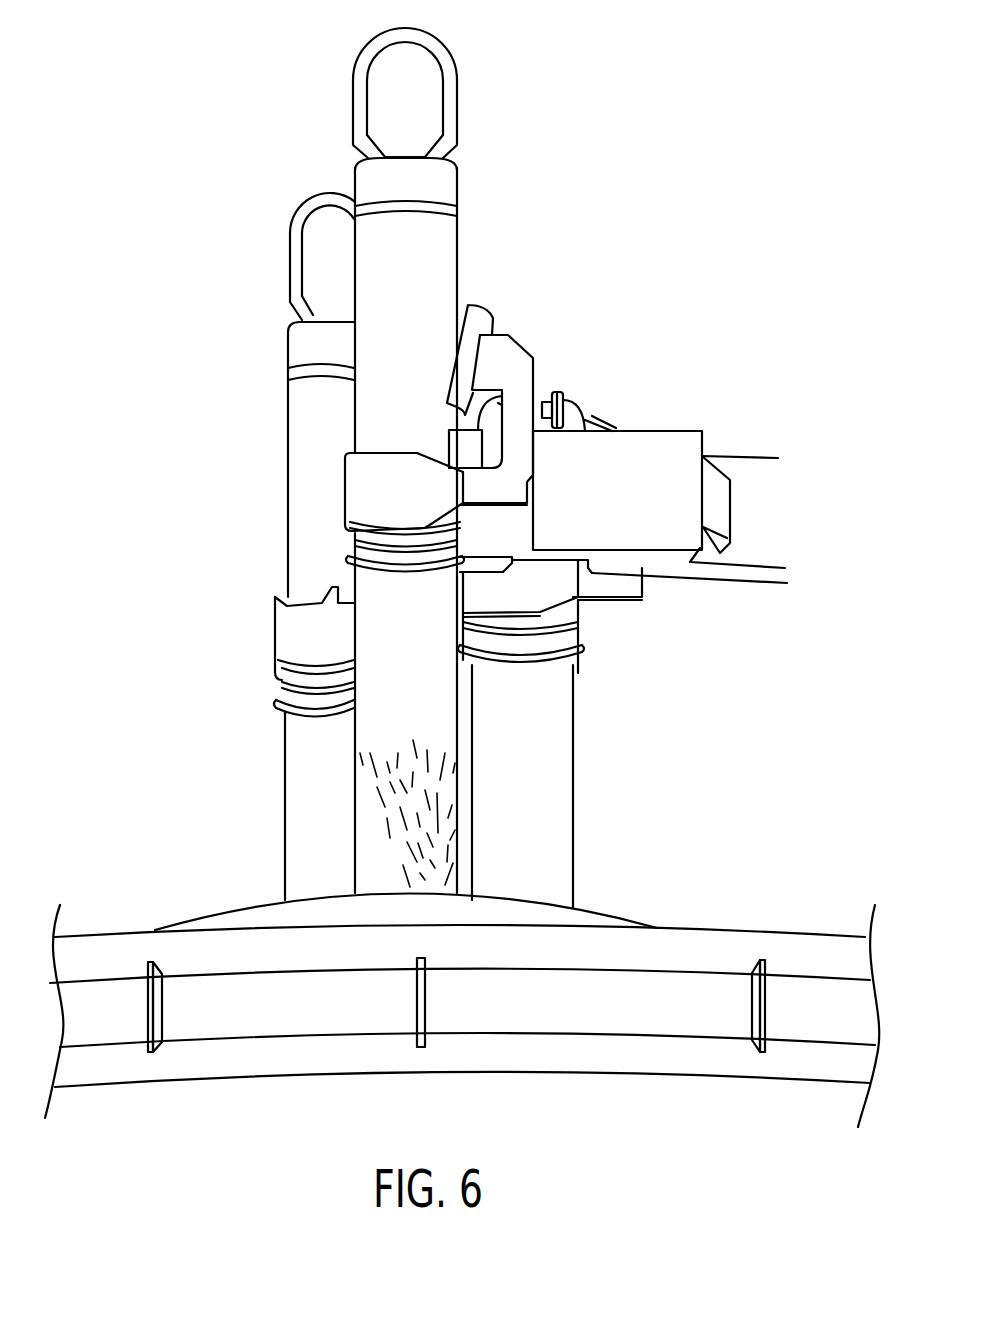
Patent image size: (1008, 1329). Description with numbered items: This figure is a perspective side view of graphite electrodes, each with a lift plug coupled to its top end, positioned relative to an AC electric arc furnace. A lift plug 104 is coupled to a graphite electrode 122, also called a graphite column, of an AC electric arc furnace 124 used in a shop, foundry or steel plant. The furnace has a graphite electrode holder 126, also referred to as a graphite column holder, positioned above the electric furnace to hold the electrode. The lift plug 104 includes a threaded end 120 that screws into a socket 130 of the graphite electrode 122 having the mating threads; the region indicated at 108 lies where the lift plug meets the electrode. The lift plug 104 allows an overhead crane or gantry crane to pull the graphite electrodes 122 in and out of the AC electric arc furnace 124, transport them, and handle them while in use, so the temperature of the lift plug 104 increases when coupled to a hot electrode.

The lift plug 104 is at (461, 44).
The cap of hydraulic cylinder 108 is at (336, 143).
The threaded end 120 is at (336, 171).
The graphite electrode 122 is at (432, 273).
The AC electric arc furnace 124 is at (149, 834).
The graphite electrode holder 126 is at (628, 505).
The socket 130 is at (481, 183).